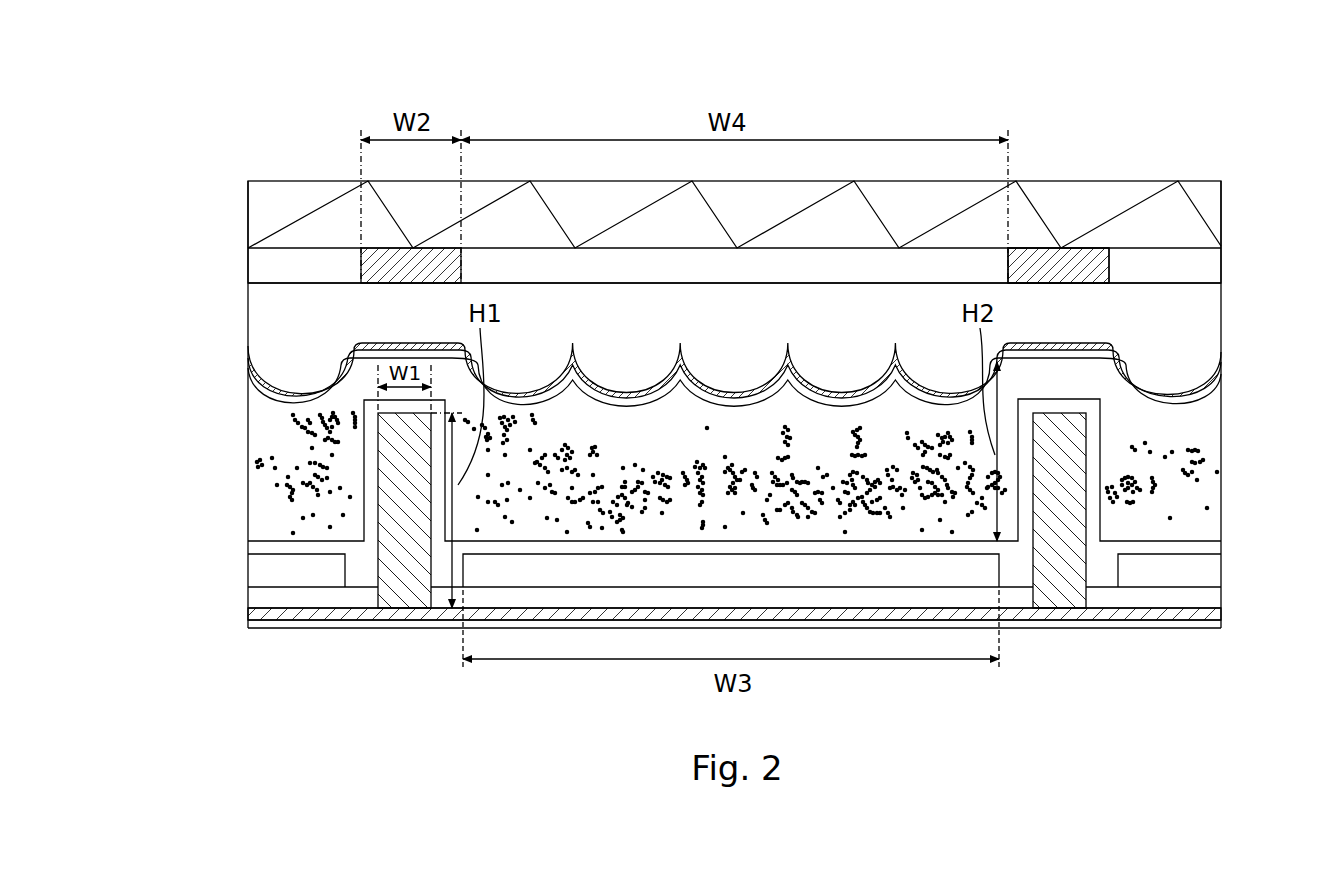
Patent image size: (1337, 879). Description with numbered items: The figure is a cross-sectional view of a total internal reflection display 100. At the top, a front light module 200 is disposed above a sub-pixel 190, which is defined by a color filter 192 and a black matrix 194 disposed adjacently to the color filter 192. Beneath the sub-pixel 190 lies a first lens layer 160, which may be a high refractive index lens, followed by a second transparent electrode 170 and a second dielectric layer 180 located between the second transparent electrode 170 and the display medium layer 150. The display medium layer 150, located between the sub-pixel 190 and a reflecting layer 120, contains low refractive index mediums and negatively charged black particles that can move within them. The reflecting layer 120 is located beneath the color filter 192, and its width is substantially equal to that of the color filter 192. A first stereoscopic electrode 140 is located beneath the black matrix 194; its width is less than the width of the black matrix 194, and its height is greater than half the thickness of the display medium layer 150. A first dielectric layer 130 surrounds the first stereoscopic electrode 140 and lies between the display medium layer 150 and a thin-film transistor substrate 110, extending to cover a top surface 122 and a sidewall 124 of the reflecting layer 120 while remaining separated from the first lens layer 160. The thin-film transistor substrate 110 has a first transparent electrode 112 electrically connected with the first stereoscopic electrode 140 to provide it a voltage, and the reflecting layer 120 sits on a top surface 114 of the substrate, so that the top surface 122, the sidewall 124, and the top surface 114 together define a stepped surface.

The total internal reflection display 100 is at (235, 82).
The thin-film transistor substrate 110 is at (1220, 622).
The first transparent electrode 112 is at (1216, 612).
The top surface 114 is at (358, 587).
The reflecting layer 120 is at (754, 561).
The top surface 122 is at (318, 553).
The sidewall 124 is at (345, 573).
The first dielectric layer 130 is at (1213, 548).
The first stereoscopic electrode 140 is at (1068, 437).
The display medium layer 150 is at (1213, 492).
The first lens layer 160 is at (1212, 327).
The second transparent electrode 170 is at (1220, 360).
The second dielectric layer 180 is at (1213, 386).
The sub-pixel 190 is at (747, 181).
The color filter 192 is at (993, 257).
The black matrix 194 is at (1080, 252).
The front light module 200 is at (1197, 190).